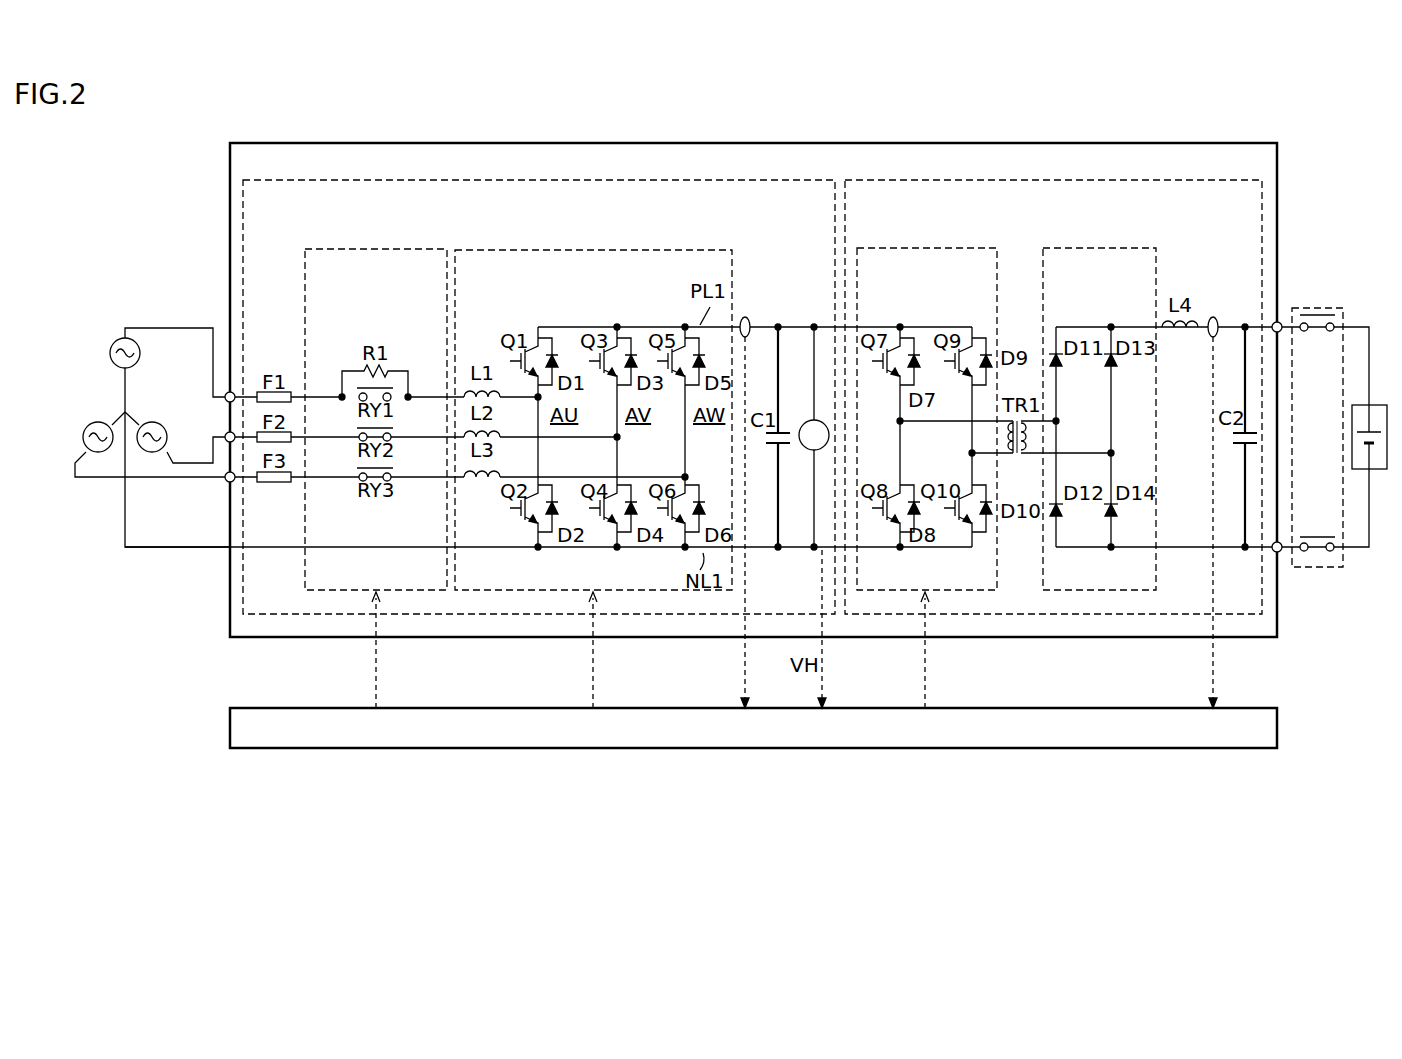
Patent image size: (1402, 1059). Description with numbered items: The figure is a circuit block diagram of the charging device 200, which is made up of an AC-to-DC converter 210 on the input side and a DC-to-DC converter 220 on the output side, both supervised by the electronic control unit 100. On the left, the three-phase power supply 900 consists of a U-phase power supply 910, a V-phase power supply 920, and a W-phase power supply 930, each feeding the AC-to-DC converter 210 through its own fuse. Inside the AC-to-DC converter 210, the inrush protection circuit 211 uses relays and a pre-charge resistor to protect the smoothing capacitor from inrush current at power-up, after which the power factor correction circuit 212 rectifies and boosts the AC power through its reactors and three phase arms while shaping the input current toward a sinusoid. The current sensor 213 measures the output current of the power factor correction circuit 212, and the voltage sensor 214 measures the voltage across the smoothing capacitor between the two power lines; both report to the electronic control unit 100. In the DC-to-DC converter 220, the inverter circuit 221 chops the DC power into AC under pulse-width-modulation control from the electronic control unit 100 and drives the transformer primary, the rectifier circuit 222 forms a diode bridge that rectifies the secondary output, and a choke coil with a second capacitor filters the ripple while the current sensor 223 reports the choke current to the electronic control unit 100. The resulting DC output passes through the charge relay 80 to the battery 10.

The charging device 200 is at (1223, 143).
The AC-to-DC converter 210 is at (783, 180).
The inrush protection circuit 211 is at (378, 250).
The power factor correction (PFC) circuit 212 is at (680, 250).
The current sensor 213 is at (745, 316).
The voltage sensor 214 is at (808, 452).
The DC-to-DC converter 220 is at (1210, 180).
The inverter circuit 221 is at (955, 248).
The rectifier circuit 222 is at (1105, 248).
The current sensor 223 is at (1215, 316).
The electronic control unit (ECU) 100 is at (1030, 708).
The three-phase power supply 900 is at (136, 391).
The U-phase power supply 910 is at (137, 329).
The V-phase power supply 920 is at (163, 463).
The W-phase power supply 930 is at (93, 463).
The battery 10 is at (1373, 403).
The charge relay (CHR) 80 is at (1320, 568).